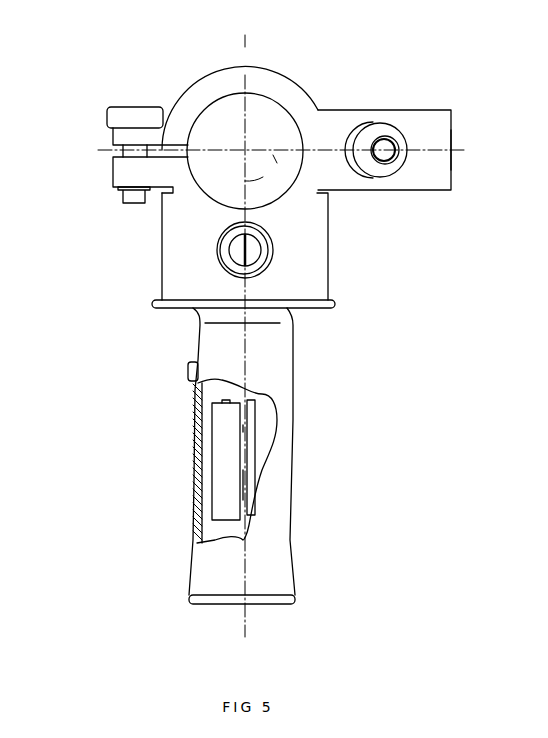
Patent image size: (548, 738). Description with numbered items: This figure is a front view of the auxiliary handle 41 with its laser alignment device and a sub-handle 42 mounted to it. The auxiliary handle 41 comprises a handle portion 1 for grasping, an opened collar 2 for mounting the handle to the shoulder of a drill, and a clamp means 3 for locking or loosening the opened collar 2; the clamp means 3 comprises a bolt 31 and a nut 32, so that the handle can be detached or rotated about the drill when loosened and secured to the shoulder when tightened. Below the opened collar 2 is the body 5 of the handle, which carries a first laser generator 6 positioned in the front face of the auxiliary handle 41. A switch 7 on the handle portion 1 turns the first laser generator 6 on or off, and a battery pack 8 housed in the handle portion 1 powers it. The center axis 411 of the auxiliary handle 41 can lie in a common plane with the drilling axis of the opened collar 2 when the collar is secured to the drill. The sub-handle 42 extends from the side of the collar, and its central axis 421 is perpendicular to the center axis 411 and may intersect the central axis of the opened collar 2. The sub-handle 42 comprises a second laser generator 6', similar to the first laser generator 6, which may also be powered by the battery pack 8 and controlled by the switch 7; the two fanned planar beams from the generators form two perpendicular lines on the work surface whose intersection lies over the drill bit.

The handle portion 1 is at (265, 375).
The opened collar 2 is at (306, 108).
The clamp means 3 is at (128, 107).
The bolt 31 is at (112, 120).
The nut 32 is at (132, 187).
The body 5 is at (316, 237).
The first laser generator 6 is at (307, 250).
The second laser generator 6' is at (438, 177).
The switch 7 is at (187, 370).
The battery pack 8 is at (240, 460).
The auxiliary handle 41 is at (338, 460).
The center axis 411 is at (247, 572).
The sub-handle 42 is at (404, 125).
The central axis 421 is at (437, 150).